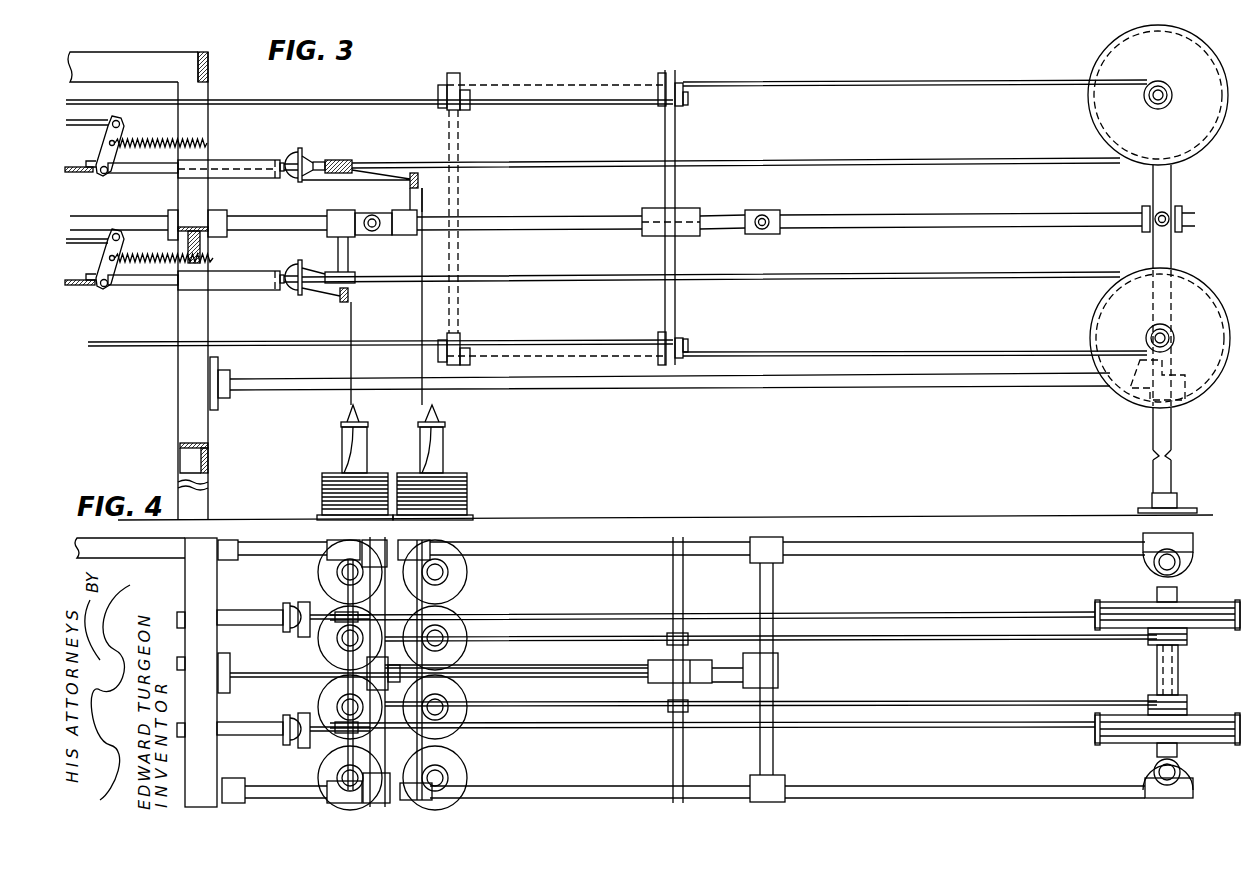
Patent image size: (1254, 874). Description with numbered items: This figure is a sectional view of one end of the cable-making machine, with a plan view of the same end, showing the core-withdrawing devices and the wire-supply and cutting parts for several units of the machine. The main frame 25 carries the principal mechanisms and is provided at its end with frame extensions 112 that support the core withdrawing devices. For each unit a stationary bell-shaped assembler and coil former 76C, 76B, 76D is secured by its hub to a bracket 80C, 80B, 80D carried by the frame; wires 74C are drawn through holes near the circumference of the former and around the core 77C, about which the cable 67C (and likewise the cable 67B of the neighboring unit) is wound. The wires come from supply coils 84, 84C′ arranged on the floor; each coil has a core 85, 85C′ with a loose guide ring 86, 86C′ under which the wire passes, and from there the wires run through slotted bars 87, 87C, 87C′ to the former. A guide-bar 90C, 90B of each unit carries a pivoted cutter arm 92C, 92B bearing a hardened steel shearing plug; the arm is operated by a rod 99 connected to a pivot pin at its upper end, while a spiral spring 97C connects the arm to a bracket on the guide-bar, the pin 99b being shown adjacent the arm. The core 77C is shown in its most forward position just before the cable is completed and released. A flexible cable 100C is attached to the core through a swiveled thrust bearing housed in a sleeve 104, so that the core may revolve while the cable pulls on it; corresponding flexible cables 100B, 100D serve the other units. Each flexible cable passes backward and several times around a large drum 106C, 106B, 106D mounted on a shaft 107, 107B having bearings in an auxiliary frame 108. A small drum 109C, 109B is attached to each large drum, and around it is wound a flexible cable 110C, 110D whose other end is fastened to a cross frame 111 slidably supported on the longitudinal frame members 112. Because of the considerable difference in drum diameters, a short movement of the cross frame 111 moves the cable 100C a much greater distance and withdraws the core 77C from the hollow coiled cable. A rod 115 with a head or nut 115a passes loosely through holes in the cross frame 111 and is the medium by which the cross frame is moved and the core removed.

In FIG. 3, the main frame 25 is at (185, 372).
In FIG. 4, the main frame 25 is at (203, 583).
In FIG. 3, the cable 67C is at (82, 178).
In FIG. 3, the cable 67B is at (82, 288).
In FIG. 3, the wires 74C is at (340, 181).
In FIG. 4, the wires 74C is at (333, 623).
In FIG. 3, the assembler and coil former 76C is at (297, 174).
In FIG. 4, the assembler and coil former 76C is at (303, 603).
In FIG. 3, the assembler and coil former 76B is at (297, 297).
In FIG. 4, the assembler and coil former 76D is at (302, 748).
In FIG. 3, the core 77C is at (305, 160).
In FIG. 3, the bracket 80C is at (233, 162).
In FIG. 4, the bracket 80C is at (260, 622).
In FIG. 3, the bracket 80B is at (247, 276).
In FIG. 4, the bracket 80D is at (262, 736).
In FIG. 3, the coil 84 is at (320, 490).
In FIG. 3, the coil 84C′ is at (468, 485).
In FIG. 4, the coil 84C′ is at (452, 562).
In FIG. 3, the core 85 is at (341, 440).
In FIG. 3, the core 85C′ is at (445, 450).
In FIG. 4, the core 85C′ is at (447, 575).
In FIG. 3, the guide ring 86 is at (340, 422).
In FIG. 3, the guide ring 86C′ is at (445, 422).
In FIG. 4, the guide ring 86C′ is at (442, 580).
In FIG. 3, the slotted bar 87 is at (356, 297).
In FIG. 4, the slotted bar 87C is at (390, 672).
In FIG. 3, the slotted bar 87C′ is at (420, 182).
In FIG. 3, the guide-bar 90C is at (142, 174).
In FIG. 3, the guide-bar 90B is at (148, 288).
In FIG. 3, the cutter arm 92C is at (107, 133).
In FIG. 3, the cutter arm 92B is at (107, 247).
In FIG. 3, the spiral spring 97C is at (140, 140).
In FIG. 3, the rod 99 is at (81, 121).
In FIG. 3, the pivot 99b is at (117, 118).
In FIG. 3, the flexible cable 100C is at (812, 160).
In FIG. 4, the flexible cable 100C is at (942, 612).
In FIG. 3, the flexible cable 100B is at (877, 278).
In FIG. 4, the flexible cable 100D is at (993, 725).
In FIG. 3, the sleeve 104 is at (343, 161).
In FIG. 3, the large drum 106C is at (1110, 108).
In FIG. 4, the large drum 106C is at (1113, 606).
In FIG. 3, the large drum 106B is at (1107, 318).
In FIG. 4, the large drum 106D is at (1123, 732).
In FIG. 3, the shaft 107 is at (1152, 105).
In FIG. 4, the shaft 107 is at (1157, 667).
In FIG. 3, the shaft 107B is at (1170, 332).
In FIG. 3, the auxiliary frame 108 is at (1152, 180).
In FIG. 3, the small drum 109C is at (1168, 106).
In FIG. 3, the small drum 109B is at (1173, 343).
In FIG. 3, the flexible cable 110C is at (933, 82).
In FIG. 4, the flexible cable 110C is at (945, 640).
In FIG. 4, the flexible cable 110D is at (953, 703).
In FIG. 3, the cross frame 111 is at (668, 128).
In FIG. 4, the cross frame 111 is at (672, 588).
In FIG. 3, the frame extensions 112 is at (822, 222).
In FIG. 4, the frame extensions 112 is at (883, 548).
In FIG. 3, the rod 115 is at (547, 97).
In FIG. 4, the rod 115 is at (547, 672).
In FIG. 3, the head or nut 115a is at (689, 99).
In FIG. 4, the head or nut 115a is at (690, 668).